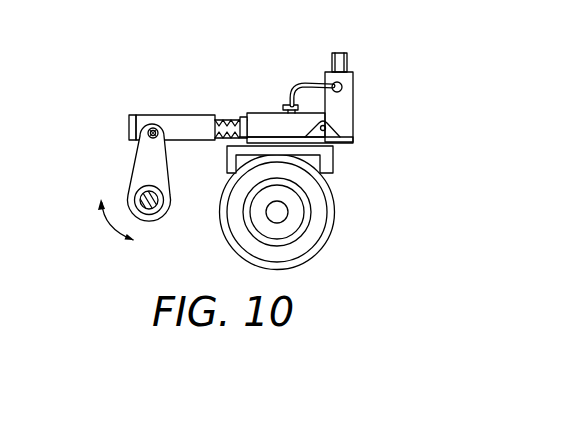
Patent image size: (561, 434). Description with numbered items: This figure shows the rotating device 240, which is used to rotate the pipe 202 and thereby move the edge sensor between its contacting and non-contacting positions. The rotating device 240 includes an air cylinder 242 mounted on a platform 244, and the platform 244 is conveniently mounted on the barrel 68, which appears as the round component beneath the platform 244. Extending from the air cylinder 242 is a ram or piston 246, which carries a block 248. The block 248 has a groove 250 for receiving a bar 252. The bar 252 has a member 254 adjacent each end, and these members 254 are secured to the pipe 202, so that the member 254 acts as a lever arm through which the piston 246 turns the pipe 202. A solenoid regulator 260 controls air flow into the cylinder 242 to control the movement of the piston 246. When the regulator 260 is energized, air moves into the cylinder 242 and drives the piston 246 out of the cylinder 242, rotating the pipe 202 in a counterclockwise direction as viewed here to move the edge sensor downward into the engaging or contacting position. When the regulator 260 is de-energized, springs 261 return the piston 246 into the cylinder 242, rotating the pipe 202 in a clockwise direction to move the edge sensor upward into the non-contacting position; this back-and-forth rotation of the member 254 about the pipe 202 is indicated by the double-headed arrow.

The rotating device 240 is at (264, 72).
The air cylinder 242 is at (276, 112).
The platform 244 is at (333, 166).
The ram or piston 246 is at (226, 118).
The block 248 is at (130, 118).
The groove 250 is at (164, 118).
The bar 252 is at (150, 128).
The member 254 is at (137, 166).
The solenoid regulator 260 is at (353, 97).
The springs 261 is at (236, 118).
The barrel 68 is at (335, 209).
The pipe 202 is at (150, 207).